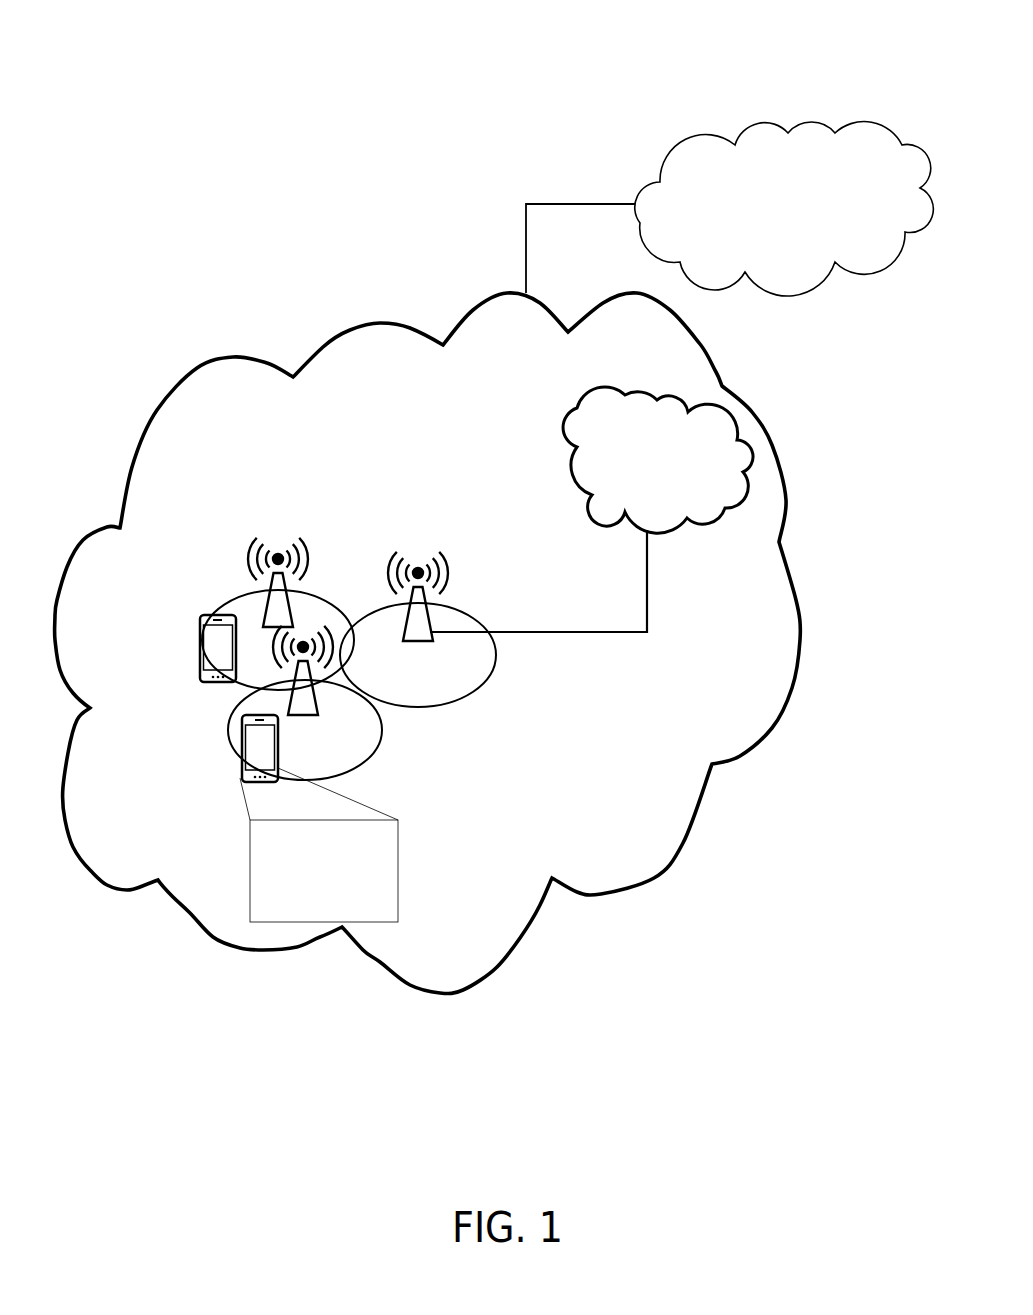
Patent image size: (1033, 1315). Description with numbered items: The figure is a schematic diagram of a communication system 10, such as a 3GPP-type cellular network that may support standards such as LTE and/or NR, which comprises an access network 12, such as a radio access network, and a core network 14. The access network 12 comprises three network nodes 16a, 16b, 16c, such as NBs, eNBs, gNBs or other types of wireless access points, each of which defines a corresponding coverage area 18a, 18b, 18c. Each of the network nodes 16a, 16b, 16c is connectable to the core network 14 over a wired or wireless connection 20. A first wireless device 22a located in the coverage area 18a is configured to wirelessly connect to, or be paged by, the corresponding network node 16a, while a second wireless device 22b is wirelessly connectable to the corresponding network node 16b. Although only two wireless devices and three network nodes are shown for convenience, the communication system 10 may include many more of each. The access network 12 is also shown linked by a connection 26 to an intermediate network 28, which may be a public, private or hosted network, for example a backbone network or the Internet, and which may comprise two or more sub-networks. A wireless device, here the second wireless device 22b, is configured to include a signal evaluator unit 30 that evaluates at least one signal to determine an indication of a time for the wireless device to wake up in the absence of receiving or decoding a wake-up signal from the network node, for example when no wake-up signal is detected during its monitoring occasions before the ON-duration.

The communication system 10 is at (242, 50).
The access network 12 is at (508, 333).
The core network 14 is at (717, 468).
The network node 16a is at (253, 566).
The network node 16b is at (317, 710).
The network node 16c is at (446, 574).
The coverage area 18a is at (230, 613).
The coverage area 18b is at (380, 733).
The coverage area 18c is at (495, 655).
The wired or wireless connection 20 is at (647, 585).
The first wireless device 22a is at (200, 683).
The second wireless device 22b is at (242, 770).
The connection link 26 is at (547, 203).
The intermediate network 28 is at (813, 213).
The signal evaluator unit 30 is at (361, 917).